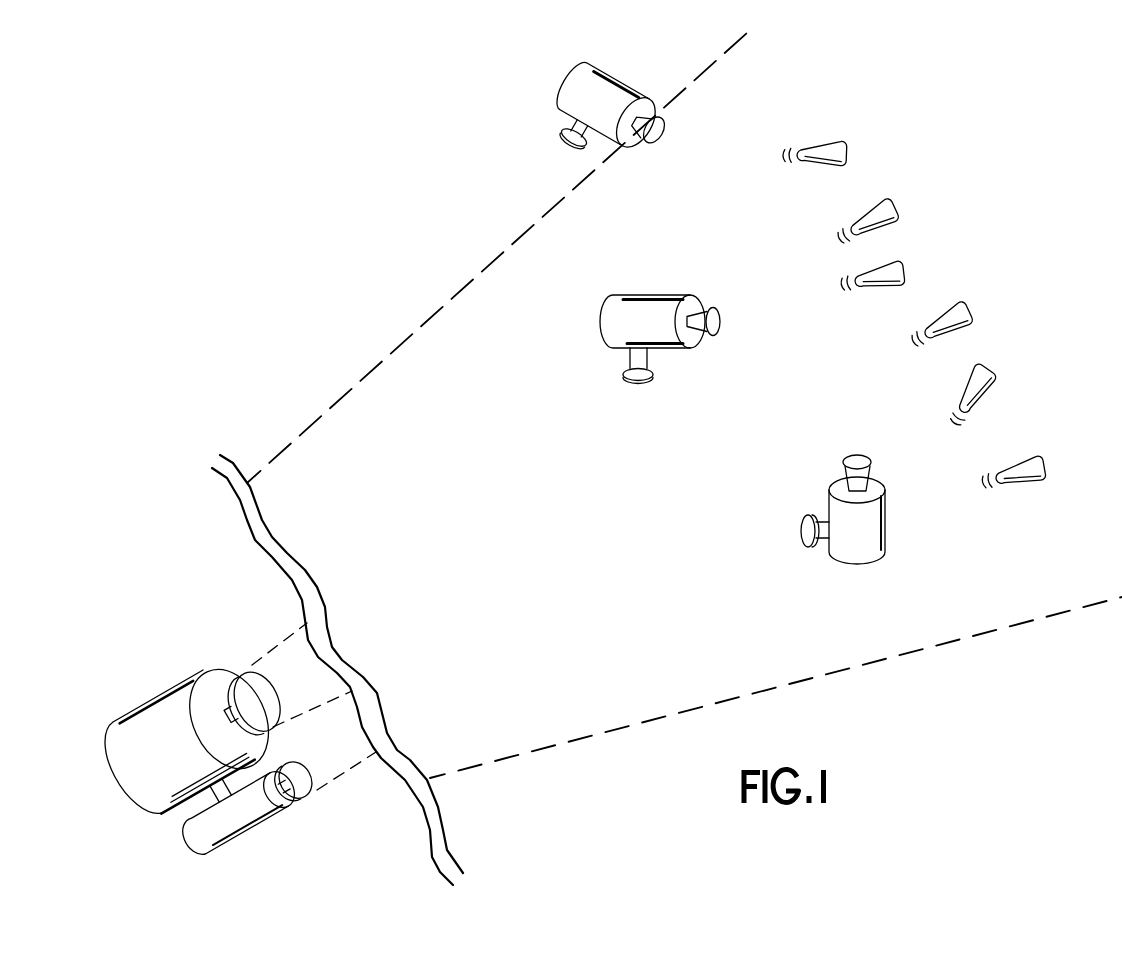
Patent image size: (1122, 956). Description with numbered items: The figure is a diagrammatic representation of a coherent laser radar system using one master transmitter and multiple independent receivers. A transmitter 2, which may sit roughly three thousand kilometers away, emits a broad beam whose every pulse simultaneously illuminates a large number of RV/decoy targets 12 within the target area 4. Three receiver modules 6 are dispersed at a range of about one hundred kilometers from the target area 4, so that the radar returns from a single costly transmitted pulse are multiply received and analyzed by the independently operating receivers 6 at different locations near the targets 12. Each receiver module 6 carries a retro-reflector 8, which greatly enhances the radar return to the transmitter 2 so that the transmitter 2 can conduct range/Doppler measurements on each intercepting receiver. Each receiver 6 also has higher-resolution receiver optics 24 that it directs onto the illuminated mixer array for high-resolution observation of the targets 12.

The transmitter 2 is at (171, 684).
The target area 4 is at (878, 97).
The receiver module 6 is at (620, 72).
The retro-reflector 8 is at (568, 146).
The target 12 is at (849, 149).
The receiver optics 24 is at (667, 131).